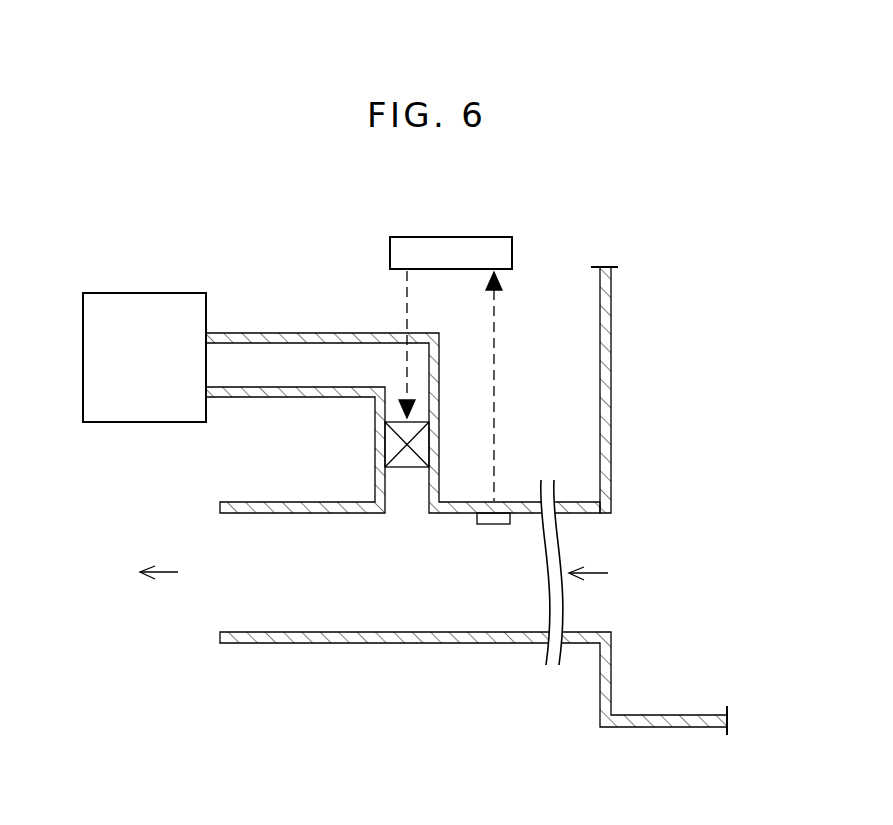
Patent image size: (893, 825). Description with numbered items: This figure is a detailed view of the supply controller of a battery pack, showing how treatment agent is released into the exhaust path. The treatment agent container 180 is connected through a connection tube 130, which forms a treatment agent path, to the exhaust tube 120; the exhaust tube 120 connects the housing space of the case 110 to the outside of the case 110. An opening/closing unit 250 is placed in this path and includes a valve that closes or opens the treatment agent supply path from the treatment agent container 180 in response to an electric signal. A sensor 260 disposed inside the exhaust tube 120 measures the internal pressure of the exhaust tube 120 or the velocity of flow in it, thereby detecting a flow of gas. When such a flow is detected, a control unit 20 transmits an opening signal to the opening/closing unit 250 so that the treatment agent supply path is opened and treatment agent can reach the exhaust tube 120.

The control unit 20 is at (464, 238).
The case 110 is at (608, 355).
The exhaust tube 120 is at (390, 645).
The connection tube 130 is at (305, 333).
The treatment agent container 180 is at (142, 293).
The opening/closing unit 250 is at (383, 446).
The sensor 260 is at (492, 526).